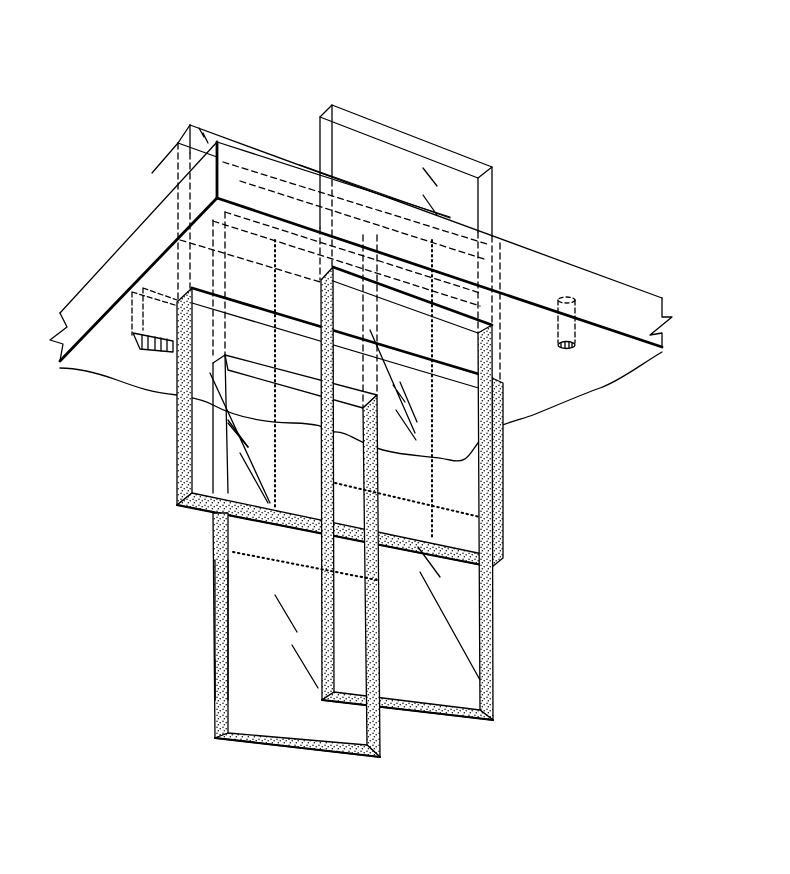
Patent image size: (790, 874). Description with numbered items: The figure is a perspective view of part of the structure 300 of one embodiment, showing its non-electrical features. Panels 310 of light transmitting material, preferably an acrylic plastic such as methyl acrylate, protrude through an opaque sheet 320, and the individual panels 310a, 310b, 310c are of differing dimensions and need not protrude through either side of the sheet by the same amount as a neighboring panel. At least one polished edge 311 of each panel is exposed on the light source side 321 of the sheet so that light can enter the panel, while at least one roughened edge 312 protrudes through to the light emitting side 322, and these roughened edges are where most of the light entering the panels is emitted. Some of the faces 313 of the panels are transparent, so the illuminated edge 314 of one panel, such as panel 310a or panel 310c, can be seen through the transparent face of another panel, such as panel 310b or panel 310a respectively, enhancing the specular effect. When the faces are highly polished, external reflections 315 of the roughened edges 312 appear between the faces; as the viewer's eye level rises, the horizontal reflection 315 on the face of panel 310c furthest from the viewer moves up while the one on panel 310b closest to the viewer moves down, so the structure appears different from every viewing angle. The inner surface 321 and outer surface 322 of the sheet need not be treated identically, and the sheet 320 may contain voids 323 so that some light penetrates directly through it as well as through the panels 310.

The structure 300 is at (546, 126).
The panels 310 is at (252, 685).
The panel 310a is at (180, 500).
The panel 310b is at (497, 625).
The panel 310c is at (382, 735).
The polished edge 311 is at (428, 152).
The roughened edge 312 is at (248, 507).
The faces 313 is at (217, 673).
The illuminated edge 314 is at (210, 478).
The external reflections 315 is at (423, 503).
The opaque sheet 320 is at (647, 318).
The light source side 321 is at (612, 312).
The light emitting side 322 is at (610, 358).
The voids 323 is at (137, 320).